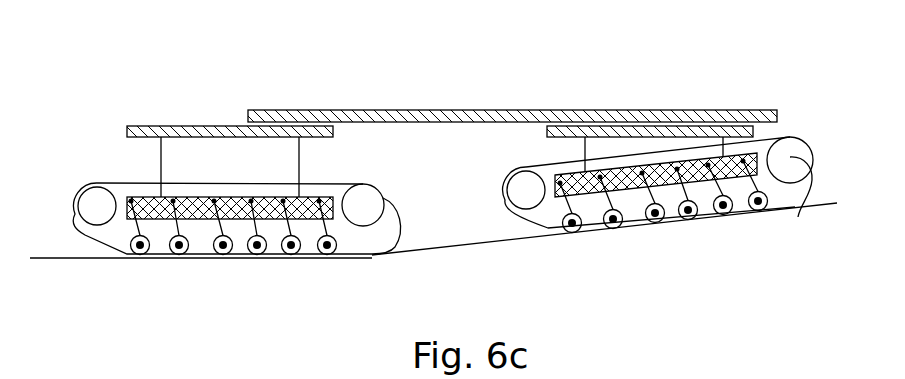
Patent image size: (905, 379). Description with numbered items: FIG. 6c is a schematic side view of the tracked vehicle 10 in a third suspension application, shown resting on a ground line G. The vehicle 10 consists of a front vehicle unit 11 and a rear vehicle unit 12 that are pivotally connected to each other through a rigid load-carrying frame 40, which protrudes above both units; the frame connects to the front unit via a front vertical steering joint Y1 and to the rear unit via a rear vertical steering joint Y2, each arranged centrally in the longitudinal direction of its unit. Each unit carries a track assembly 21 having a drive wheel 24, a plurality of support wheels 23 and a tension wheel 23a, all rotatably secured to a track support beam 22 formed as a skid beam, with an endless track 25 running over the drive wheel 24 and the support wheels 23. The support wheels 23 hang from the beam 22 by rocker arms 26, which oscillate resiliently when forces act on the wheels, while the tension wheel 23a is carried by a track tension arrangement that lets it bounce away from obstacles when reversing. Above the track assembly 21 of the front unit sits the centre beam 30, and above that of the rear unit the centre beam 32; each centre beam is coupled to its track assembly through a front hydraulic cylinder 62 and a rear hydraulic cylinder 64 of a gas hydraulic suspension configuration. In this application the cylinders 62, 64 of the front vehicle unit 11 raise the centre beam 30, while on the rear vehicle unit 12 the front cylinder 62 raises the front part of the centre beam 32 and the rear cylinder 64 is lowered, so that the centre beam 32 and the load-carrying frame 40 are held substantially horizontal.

The vehicle 10 is at (661, 47).
The front vehicle unit 11 is at (160, 279).
The rear vehicle unit 12 is at (677, 256).
The track assembly 21 is at (78, 230).
The track support beam 22 is at (203, 195).
The support wheels 23 is at (290, 255).
The tension wheel 23a is at (374, 198).
The drive wheel 24 is at (99, 208).
The endless track 25 is at (404, 240).
The rocker arms 26 is at (293, 230).
The centre beam 30 is at (203, 123).
The centre beam 32 is at (627, 123).
The load-carrying frame 40 is at (404, 108).
The front hydraulic cylinder 62 is at (161, 170).
The rear hydraulic cylinder 64 is at (299, 167).
The ground line G is at (100, 261).
The front vertical steering joint Y1 is at (258, 127).
The rear vertical steering joint Y2 is at (660, 124).